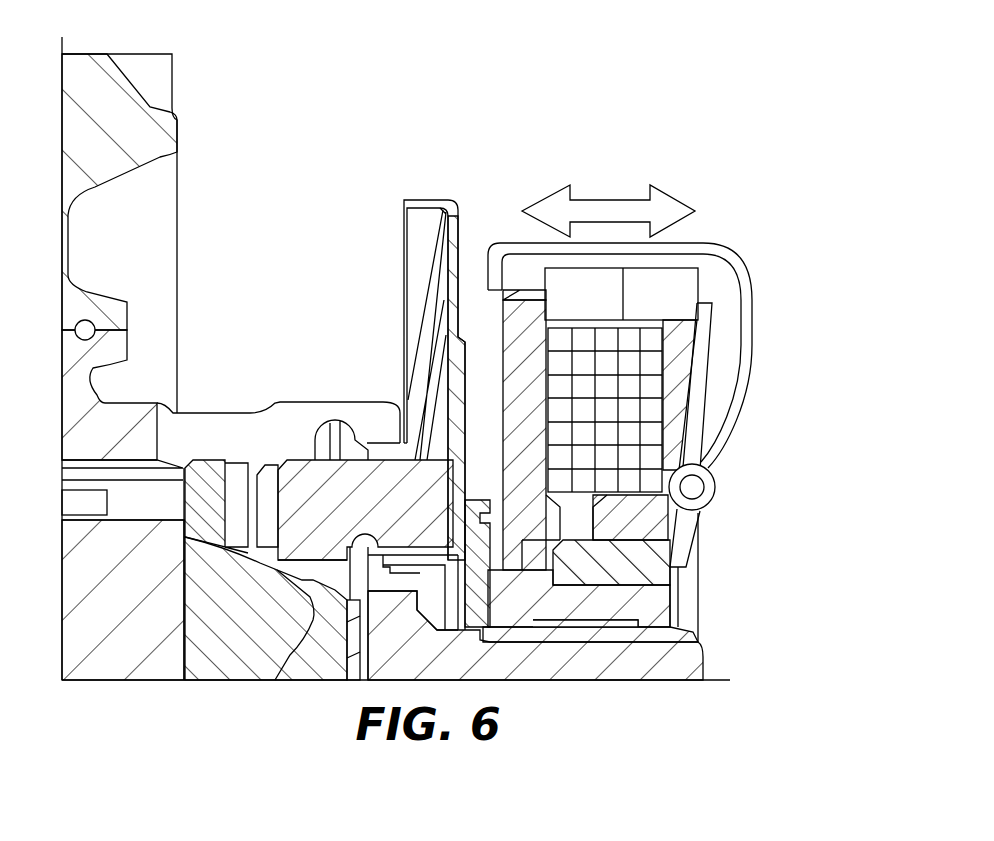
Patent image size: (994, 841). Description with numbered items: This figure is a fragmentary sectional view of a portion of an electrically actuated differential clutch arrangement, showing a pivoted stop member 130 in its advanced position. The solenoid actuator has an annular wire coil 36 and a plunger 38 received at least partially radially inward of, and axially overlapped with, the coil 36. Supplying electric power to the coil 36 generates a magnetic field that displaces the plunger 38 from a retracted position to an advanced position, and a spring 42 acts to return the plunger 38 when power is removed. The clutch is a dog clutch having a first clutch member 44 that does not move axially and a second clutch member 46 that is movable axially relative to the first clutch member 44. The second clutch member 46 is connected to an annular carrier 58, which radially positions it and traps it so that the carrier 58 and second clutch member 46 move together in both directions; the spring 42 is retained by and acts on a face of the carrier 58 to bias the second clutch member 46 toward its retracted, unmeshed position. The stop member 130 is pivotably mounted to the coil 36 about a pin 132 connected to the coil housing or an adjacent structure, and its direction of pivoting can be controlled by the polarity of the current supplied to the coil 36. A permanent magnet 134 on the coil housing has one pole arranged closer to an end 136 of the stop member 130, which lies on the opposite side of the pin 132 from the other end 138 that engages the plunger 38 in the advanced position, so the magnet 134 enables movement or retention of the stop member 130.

The annular wire coil 36 is at (635, 365).
The plunger 38 is at (672, 598).
The spring 42 is at (430, 296).
The first clutch member 44 is at (202, 490).
The second clutch member 46 is at (305, 490).
The carrier 58 is at (430, 203).
The stop member 130 is at (712, 366).
The pin 132 is at (677, 497).
The permanent magnet 134 is at (688, 264).
The end of the stop member 136 is at (708, 337).
The end of the stop member 138 is at (689, 533).